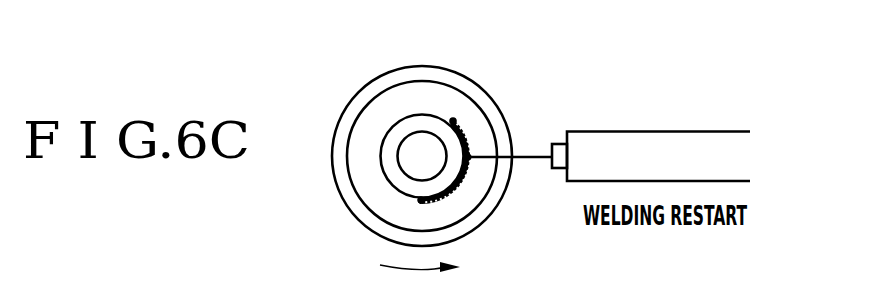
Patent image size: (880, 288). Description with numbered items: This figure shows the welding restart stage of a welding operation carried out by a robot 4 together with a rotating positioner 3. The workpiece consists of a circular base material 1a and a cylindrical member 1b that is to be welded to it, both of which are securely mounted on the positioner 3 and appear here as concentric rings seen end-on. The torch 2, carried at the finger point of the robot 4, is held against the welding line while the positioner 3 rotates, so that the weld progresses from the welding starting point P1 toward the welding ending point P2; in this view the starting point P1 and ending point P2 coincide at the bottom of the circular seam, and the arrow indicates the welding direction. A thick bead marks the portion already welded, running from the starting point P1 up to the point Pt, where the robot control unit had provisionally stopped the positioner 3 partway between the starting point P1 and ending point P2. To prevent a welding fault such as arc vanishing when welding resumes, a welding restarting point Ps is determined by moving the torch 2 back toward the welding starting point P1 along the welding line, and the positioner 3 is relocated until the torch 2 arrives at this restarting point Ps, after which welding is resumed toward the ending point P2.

The circular base material 1a is at (357, 118).
The cylindrical member 1b is at (414, 126).
The torch 2 is at (533, 155).
The positioner 3 is at (352, 217).
The robot 4 is at (705, 131).
The point Pt is at (456, 118).
The welding restarting point Ps is at (468, 158).
The welding starting point P1 is at (423, 203).
The welding ending point P2 is at (423, 203).